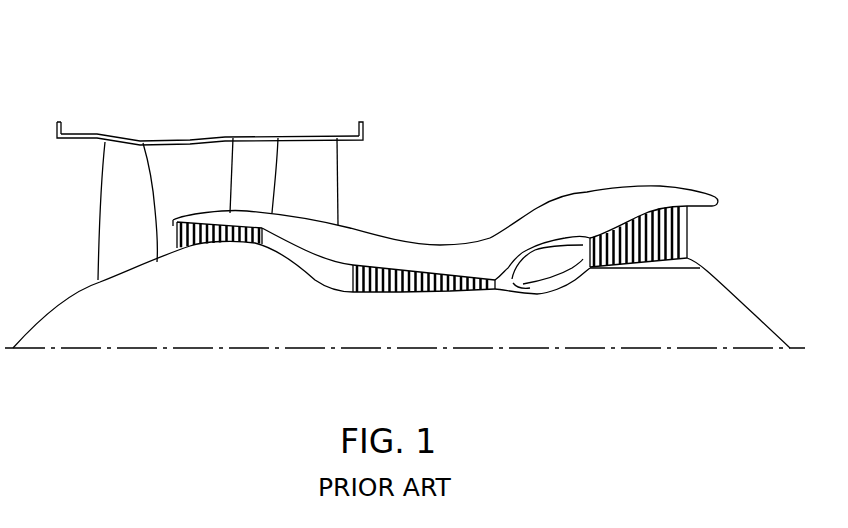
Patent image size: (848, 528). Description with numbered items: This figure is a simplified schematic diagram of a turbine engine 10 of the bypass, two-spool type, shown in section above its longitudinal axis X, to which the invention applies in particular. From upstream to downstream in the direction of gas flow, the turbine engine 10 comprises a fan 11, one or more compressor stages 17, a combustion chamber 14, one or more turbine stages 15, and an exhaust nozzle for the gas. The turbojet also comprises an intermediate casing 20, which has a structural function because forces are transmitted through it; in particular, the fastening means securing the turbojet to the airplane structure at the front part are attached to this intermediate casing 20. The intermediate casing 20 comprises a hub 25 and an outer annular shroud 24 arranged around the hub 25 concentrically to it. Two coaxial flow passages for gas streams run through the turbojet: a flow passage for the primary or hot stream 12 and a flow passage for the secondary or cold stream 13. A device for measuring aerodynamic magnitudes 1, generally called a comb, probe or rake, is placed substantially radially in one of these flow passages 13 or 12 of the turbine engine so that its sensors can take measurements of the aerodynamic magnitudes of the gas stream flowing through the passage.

The device for measuring aerodynamic magnitudes 1 is at (235, 162).
The turbine engine 10 is at (435, 130).
The fan 11 is at (120, 213).
The flow passage for the primary stream 12 is at (172, 237).
The flow passage for the secondary stream 13 is at (165, 190).
The combustion chamber 14 is at (543, 267).
The turbine stages 15 is at (575, 230).
The compressor stages 17 is at (202, 208).
The intermediate casing 20 is at (342, 123).
The outer annular shroud 24 is at (208, 135).
The hub 25 is at (328, 225).
The axis X is at (158, 348).